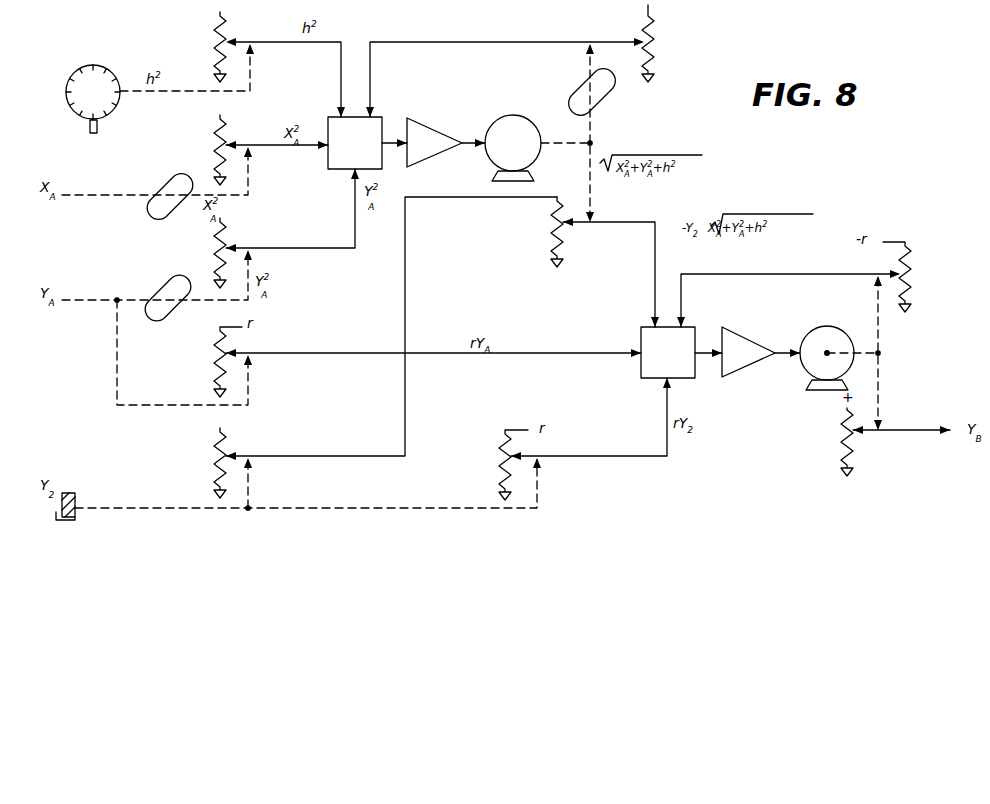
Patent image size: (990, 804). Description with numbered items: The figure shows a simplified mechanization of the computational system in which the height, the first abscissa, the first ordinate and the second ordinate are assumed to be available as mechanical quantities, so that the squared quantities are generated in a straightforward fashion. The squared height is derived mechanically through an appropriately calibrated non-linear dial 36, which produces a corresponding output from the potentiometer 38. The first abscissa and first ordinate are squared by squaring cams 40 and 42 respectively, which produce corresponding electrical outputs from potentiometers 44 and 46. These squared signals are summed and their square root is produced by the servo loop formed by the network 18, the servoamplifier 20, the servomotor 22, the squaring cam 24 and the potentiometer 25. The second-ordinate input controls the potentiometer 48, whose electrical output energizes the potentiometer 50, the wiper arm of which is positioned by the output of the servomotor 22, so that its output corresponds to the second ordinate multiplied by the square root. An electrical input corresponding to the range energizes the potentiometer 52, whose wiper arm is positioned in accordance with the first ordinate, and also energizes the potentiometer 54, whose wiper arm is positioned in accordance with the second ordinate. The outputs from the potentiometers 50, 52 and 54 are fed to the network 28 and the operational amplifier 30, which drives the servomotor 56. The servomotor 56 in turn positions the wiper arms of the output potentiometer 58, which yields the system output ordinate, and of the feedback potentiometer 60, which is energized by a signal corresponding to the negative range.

The network 18 is at (378, 120).
The servoamplifier 20 is at (440, 130).
The servomotor 22 is at (513, 125).
The squaring cam 24 is at (608, 96).
The potentiometer 25 is at (655, 40).
The network 28 is at (644, 378).
The operational amplifier 30 is at (740, 362).
The non-linear dial 36 is at (98, 77).
The potentiometer 38 is at (216, 42).
The squaring cam 40 is at (160, 190).
The squaring cam 42 is at (160, 291).
The potentiometer 44 is at (216, 147).
The potentiometer 46 is at (214, 248).
The potentiometer 48 is at (214, 462).
The potentiometer 50 is at (553, 232).
The potentiometer 52 is at (212, 354).
The potentiometer 54 is at (500, 458).
The servomotor 56 is at (823, 335).
The output potentiometer 58 is at (843, 435).
The feedback potentiometer 60 is at (911, 270).